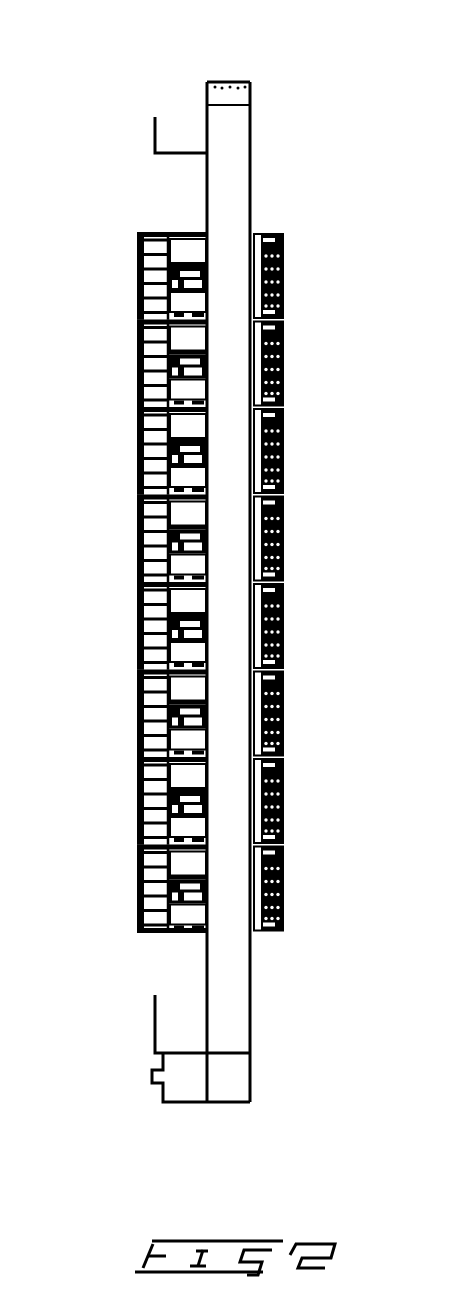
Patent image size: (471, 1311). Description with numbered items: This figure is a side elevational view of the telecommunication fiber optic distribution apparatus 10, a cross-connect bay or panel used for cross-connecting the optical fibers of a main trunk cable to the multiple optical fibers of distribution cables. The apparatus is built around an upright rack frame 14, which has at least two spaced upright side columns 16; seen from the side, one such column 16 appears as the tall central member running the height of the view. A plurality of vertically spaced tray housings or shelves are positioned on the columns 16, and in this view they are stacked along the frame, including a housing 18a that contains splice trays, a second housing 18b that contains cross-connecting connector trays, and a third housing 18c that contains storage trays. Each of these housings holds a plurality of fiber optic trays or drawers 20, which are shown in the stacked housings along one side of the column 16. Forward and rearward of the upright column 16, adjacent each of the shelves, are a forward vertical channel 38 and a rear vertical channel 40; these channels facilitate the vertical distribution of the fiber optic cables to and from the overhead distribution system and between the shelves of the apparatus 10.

The telecommunication fiber optic distribution apparatus 10 is at (312, 84).
The upright rack frame 14 is at (225, 82).
The upright side columns 16 is at (235, 197).
The housing containing splice trays 18a is at (283, 357).
The housing containing cross-connecting connector trays 18b is at (140, 540).
The housing containing storage trays 18c is at (283, 690).
The fiber optic trays 20 is at (143, 365).
The forward vertical channel 38 is at (188, 232).
The rear vertical channel 40 is at (262, 233).